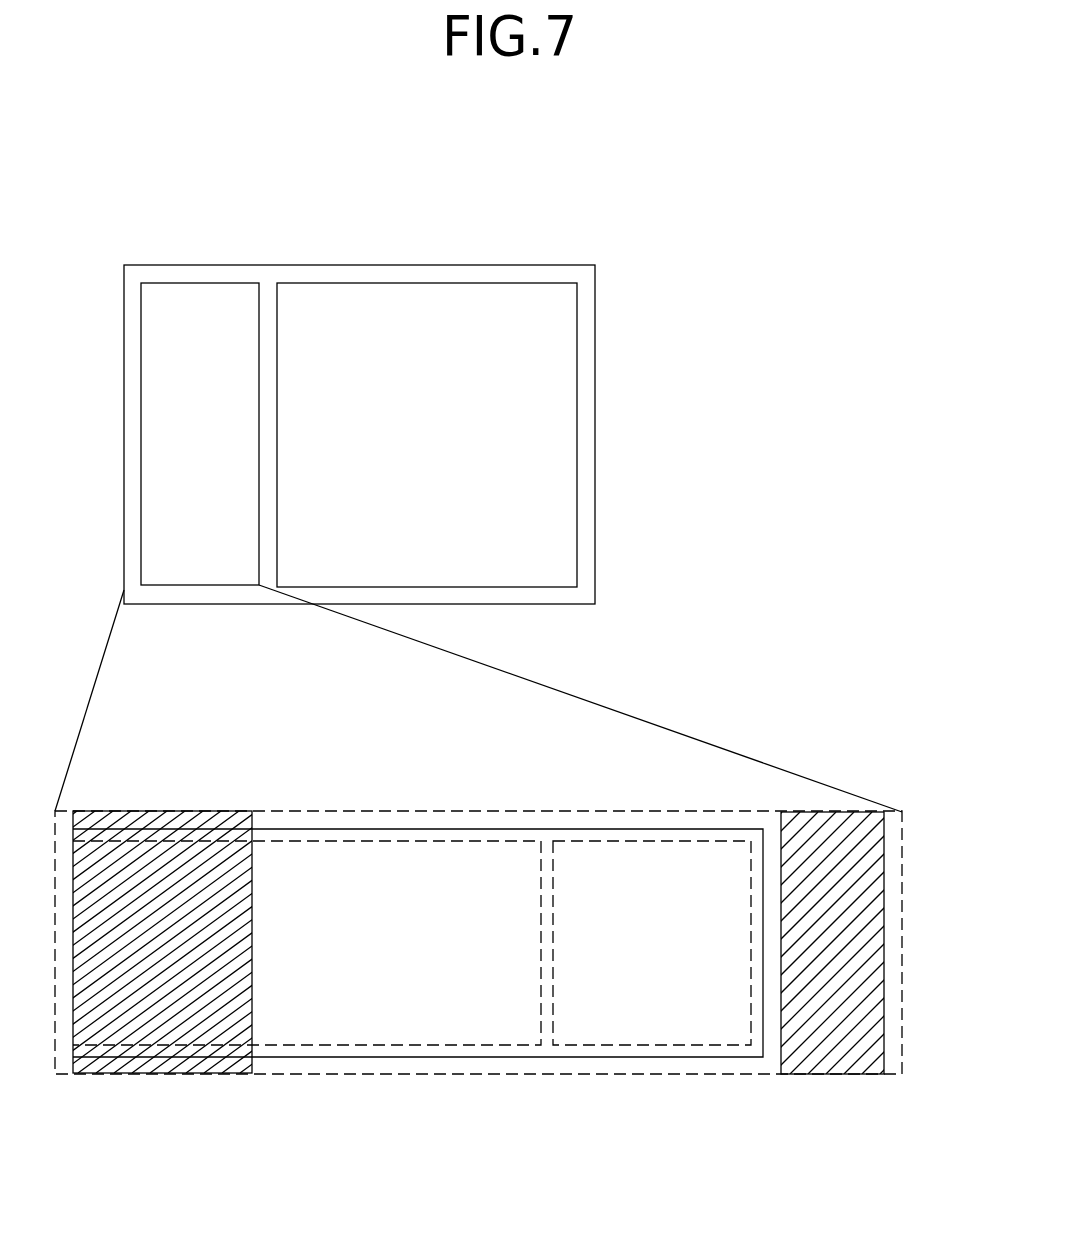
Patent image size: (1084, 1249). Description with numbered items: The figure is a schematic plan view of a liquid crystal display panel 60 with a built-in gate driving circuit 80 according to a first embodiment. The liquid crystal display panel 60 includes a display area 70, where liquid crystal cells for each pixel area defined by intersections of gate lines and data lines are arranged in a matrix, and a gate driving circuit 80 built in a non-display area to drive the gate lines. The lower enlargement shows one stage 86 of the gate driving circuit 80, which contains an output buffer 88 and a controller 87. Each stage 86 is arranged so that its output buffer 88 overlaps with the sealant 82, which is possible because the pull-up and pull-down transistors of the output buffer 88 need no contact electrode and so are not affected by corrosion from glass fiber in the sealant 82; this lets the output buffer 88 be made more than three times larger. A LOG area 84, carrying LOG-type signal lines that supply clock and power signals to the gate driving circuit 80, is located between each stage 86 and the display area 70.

The liquid crystal display panel 60 is at (595, 428).
The display area 70 is at (537, 391).
The gate driving circuit 80 is at (141, 430).
The sealant 82 is at (167, 1073).
The LOG area 84 is at (865, 943).
The stage 86 is at (362, 829).
The controller 87 is at (608, 1038).
The output buffer 88 is at (327, 1040).